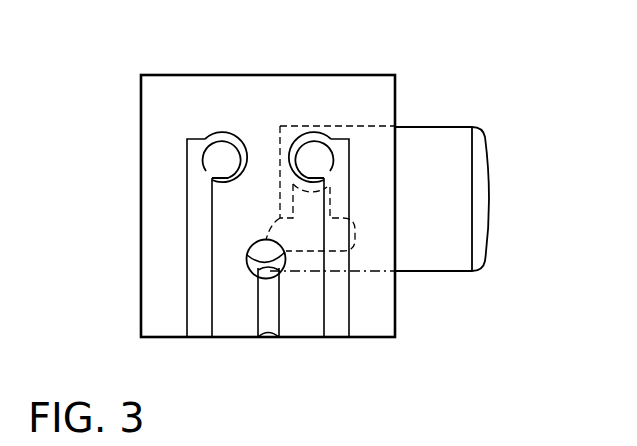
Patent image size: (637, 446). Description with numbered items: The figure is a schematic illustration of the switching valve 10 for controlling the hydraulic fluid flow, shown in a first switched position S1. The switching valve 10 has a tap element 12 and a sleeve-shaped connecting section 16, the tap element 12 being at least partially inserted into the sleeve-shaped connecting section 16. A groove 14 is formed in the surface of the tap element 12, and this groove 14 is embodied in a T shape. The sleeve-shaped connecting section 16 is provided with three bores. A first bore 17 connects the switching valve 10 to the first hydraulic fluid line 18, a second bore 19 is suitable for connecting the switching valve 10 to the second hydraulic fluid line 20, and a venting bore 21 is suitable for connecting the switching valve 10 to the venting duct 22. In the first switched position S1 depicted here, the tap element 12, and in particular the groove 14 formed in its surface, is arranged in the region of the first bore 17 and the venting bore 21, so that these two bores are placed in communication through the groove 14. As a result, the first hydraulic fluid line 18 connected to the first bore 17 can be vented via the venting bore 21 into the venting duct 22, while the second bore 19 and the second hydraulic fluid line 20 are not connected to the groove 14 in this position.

The switching valve 10 is at (317, 216).
The first switched position S1 is at (481, 89).
The tap element 12 is at (458, 182).
The groove 14 is at (303, 235).
The sleeve-shaped connecting section 16 is at (157, 171).
The first bore 17 is at (312, 158).
The first hydraulic fluid line 18 is at (337, 306).
The second bore 19 is at (222, 158).
The second hydraulic fluid line 20 is at (198, 231).
The venting bore 21 is at (263, 248).
The venting duct 22 is at (269, 306).